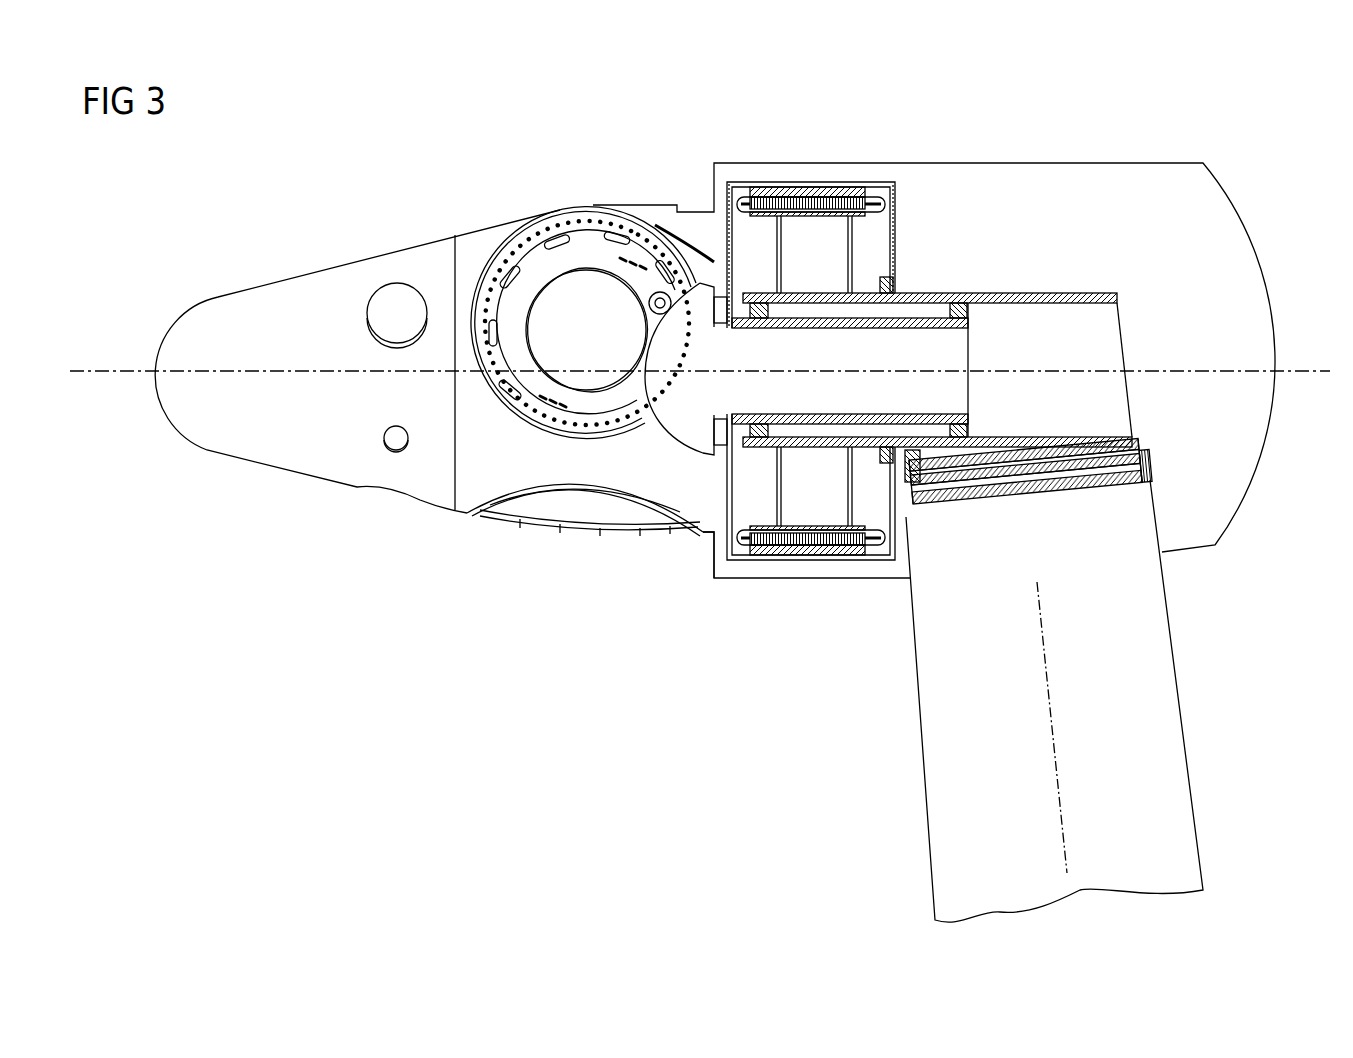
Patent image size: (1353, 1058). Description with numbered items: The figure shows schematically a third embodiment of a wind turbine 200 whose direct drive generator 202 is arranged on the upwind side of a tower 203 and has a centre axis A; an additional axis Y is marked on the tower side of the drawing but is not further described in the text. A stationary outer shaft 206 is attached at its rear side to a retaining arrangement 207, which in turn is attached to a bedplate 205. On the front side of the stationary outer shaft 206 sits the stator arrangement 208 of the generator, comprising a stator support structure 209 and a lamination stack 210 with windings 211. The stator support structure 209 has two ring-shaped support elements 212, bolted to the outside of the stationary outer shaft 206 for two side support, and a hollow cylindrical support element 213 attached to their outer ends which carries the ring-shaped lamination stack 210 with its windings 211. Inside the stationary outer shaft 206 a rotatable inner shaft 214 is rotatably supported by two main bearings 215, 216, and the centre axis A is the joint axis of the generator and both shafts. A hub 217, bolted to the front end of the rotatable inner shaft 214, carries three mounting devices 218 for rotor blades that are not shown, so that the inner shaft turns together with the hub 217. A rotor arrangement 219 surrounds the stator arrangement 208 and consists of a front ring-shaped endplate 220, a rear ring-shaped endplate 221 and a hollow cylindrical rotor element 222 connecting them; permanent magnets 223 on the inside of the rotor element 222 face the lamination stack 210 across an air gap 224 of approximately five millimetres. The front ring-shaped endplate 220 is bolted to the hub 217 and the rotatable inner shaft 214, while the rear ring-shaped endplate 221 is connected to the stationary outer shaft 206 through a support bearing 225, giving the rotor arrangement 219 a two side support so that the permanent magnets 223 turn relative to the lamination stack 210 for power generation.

The wind turbine 200 is at (1080, 125).
The direct drive generator 202 is at (855, 392).
The tower 203 is at (1074, 701).
The bedplate 205 is at (1000, 495).
The stationary outer shaft 206 is at (1078, 293).
The retaining arrangement 207 is at (950, 495).
The stator arrangement 208 is at (866, 240).
The stator support structure 209 is at (852, 268).
The lamination stack 210 is at (830, 565).
The windings 211 is at (882, 563).
The ring-shaped support elements 212 is at (848, 465).
The hollow cylindrical support element 213 is at (813, 530).
The rotatable inner shaft 214 is at (815, 320).
The main bearing 215 is at (755, 325).
The main bearing 216 is at (968, 310).
The hub 217 is at (483, 493).
The mounting devices 218 is at (528, 258).
The rotor arrangement 219 is at (858, 174).
The front ring-shaped endplate 220 is at (724, 228).
The rear ring-shaped endplate 221 is at (893, 205).
The hollow cylindrical rotor element 222 is at (745, 183).
The permanent magnets 223 is at (800, 183).
The air gap 224 is at (727, 546).
The support bearing 225 is at (888, 320).
The centre axis A is at (1312, 368).
The blade pitch axis Y is at (1042, 607).